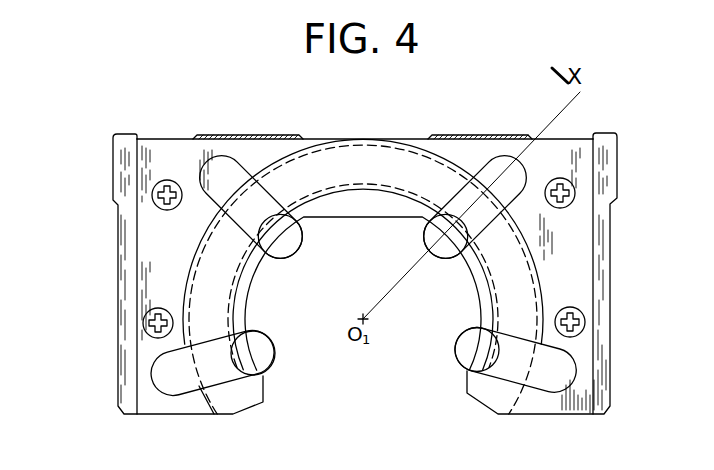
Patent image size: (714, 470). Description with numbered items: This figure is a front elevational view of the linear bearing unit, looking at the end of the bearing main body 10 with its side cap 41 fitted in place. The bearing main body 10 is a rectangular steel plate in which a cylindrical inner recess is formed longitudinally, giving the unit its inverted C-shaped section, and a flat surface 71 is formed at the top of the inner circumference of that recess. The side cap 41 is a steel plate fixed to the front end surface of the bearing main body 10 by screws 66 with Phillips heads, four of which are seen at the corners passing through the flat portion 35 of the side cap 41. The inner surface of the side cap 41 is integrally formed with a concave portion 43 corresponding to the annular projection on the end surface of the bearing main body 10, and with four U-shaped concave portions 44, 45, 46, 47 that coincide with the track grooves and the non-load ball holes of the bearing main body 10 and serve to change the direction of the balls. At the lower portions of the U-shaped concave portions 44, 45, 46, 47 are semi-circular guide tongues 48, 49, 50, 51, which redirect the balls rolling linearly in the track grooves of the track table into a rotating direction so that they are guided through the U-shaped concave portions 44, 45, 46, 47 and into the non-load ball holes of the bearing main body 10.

The bearing main body 10 is at (247, 128).
The side cap 41 is at (142, 274).
The flat portion 35 is at (583, 272).
The concave portion 43 is at (363, 151).
The U-shaped concave portion 44 is at (262, 188).
The U-shaped concave portion 45 is at (466, 186).
The U-shaped concave portion 46 is at (219, 384).
The U-shaped concave portion 47 is at (498, 377).
The semi-circular guide tongue 48 is at (302, 243).
The semi-circular guide tongue 49 is at (427, 239).
The semi-circular guide tongue 50 is at (274, 353).
The semi-circular guide tongue 51 is at (456, 348).
The screws 66 is at (166, 211).
The flat surface 71 is at (370, 215).